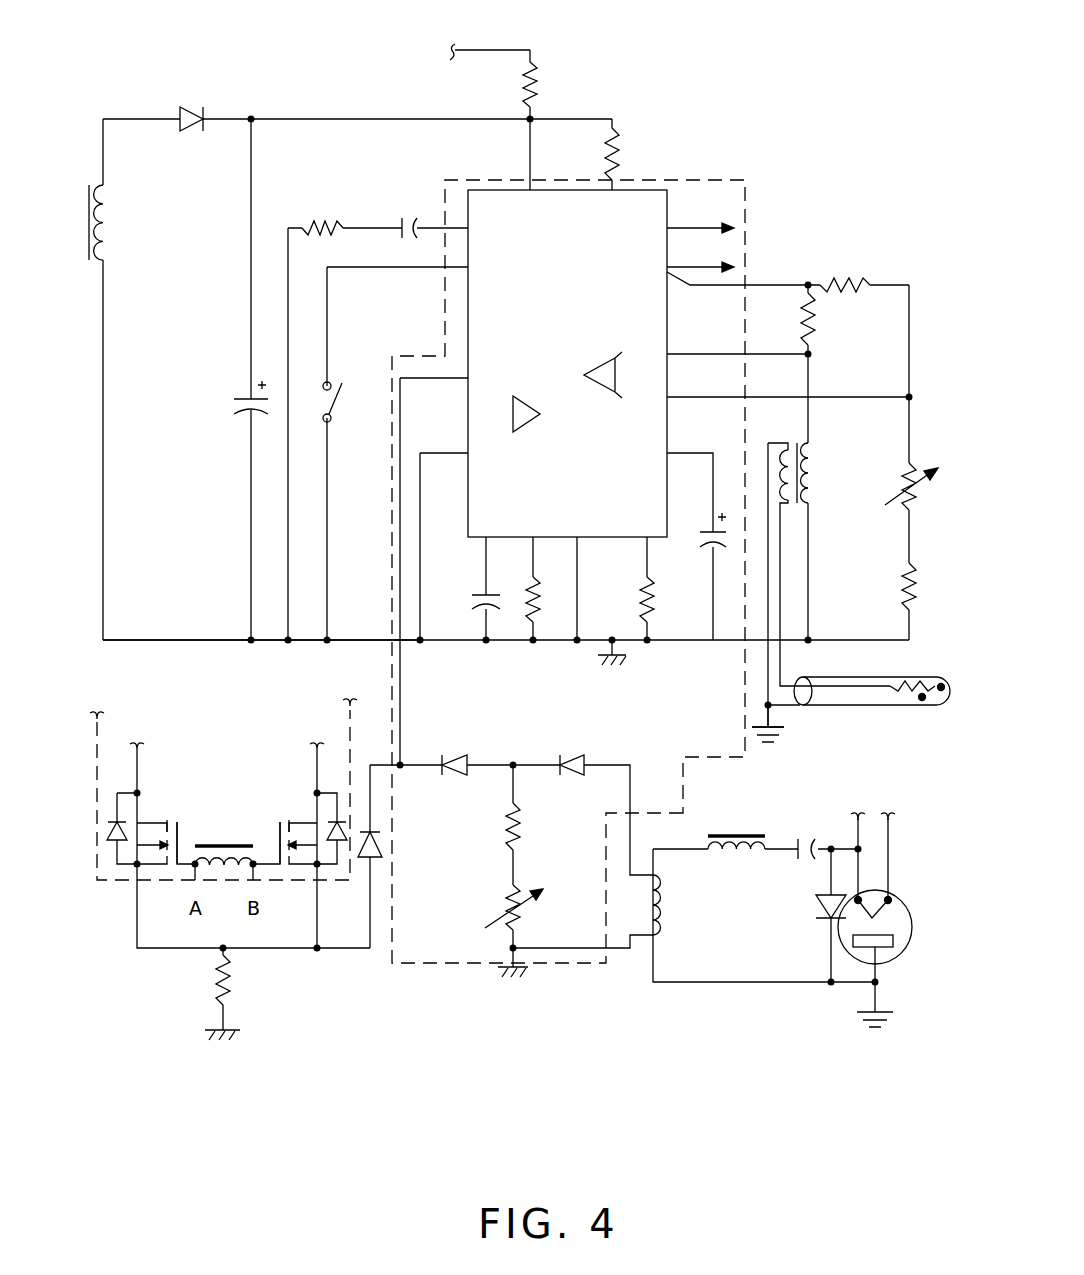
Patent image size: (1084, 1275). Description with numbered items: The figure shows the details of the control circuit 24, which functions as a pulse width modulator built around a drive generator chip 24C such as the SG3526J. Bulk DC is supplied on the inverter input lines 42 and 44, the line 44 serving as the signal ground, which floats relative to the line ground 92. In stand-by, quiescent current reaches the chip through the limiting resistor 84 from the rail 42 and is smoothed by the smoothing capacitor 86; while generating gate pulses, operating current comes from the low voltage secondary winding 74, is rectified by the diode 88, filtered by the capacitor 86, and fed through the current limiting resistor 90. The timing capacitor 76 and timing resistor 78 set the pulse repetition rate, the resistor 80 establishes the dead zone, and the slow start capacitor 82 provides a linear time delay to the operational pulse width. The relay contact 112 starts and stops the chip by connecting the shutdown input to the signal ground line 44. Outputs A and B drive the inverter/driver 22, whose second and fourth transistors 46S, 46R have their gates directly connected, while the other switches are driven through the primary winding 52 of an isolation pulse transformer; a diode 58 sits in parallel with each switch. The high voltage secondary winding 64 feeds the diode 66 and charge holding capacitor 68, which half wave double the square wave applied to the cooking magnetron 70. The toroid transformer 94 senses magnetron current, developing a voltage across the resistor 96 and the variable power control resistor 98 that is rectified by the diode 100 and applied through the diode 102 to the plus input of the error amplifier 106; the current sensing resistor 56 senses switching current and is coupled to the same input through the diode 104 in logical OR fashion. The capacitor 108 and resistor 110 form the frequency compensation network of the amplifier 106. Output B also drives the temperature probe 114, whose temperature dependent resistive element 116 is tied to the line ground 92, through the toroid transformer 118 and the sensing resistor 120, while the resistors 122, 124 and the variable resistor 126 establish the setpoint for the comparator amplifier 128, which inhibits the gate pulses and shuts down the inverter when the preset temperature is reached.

The inverter input line 42 is at (493, 50).
The limiting resistor 84 is at (528, 75).
The current limiting resistor 90 is at (612, 155).
The control circuit 24 is at (745, 165).
The drive generator chip 24C is at (668, 222).
The diode 88 is at (180, 128).
The secondary winding 74 is at (108, 220).
The smoothing capacitor 86 is at (248, 412).
The resistor 110 is at (336, 217).
The capacitor 108 is at (397, 233).
The relay contact 112 is at (343, 385).
The inverter input line 44 is at (143, 642).
The comparator amplifier 128 is at (612, 372).
The error amplifier 106 is at (539, 416).
The slow start capacitor 82 is at (713, 530).
The timing capacitor 76 is at (478, 592).
The timing resistor 78 is at (533, 586).
The resistor 80 is at (652, 583).
The resistor 122 is at (847, 278).
The resistor 120 is at (816, 326).
The toroid transformer 118 is at (811, 470).
The variable resistor 126 is at (917, 470).
The resistor 124 is at (917, 580).
The temperature probe 114 is at (910, 707).
The temperature dependent resistive element 116 is at (905, 683).
The line ground 92 is at (768, 710).
The diode 102 is at (455, 755).
The diode 100 is at (585, 762).
The resistor 96 is at (523, 818).
The variable power control resistor 98 is at (505, 925).
The diode 104 is at (376, 858).
The diode 58 is at (112, 828).
The second transistor 46S is at (175, 823).
The fourth transistor 46R is at (280, 823).
The primary winding 52 is at (205, 846).
The inverter/driver 22 is at (117, 880).
The current sensing resistor 56 is at (220, 978).
The toroid transformer 94 is at (660, 897).
The high voltage secondary winding 64 is at (752, 846).
The charge holding capacitor 68 is at (797, 856).
The diode 66 is at (822, 907).
The cooking magnetron 70 is at (900, 915).